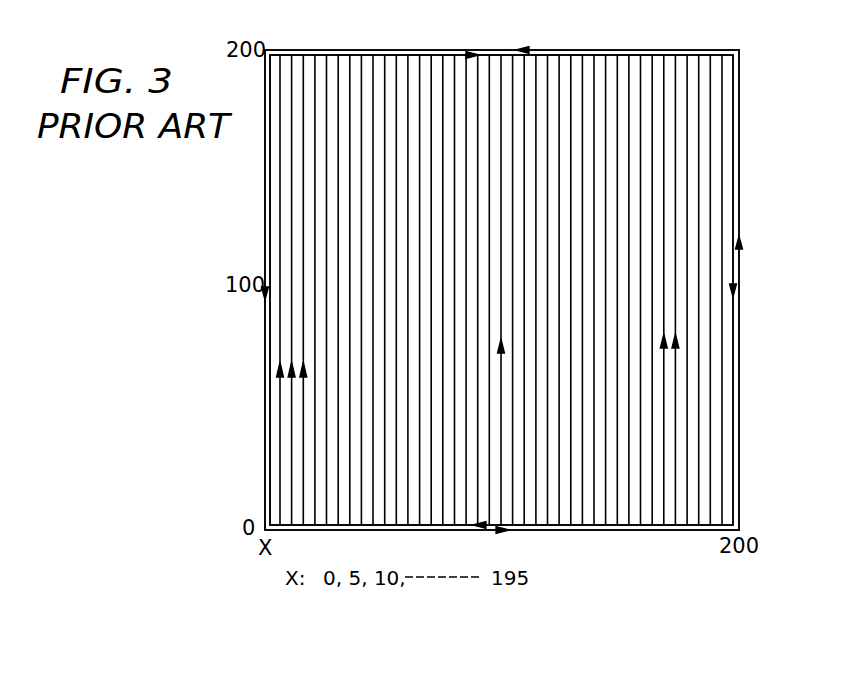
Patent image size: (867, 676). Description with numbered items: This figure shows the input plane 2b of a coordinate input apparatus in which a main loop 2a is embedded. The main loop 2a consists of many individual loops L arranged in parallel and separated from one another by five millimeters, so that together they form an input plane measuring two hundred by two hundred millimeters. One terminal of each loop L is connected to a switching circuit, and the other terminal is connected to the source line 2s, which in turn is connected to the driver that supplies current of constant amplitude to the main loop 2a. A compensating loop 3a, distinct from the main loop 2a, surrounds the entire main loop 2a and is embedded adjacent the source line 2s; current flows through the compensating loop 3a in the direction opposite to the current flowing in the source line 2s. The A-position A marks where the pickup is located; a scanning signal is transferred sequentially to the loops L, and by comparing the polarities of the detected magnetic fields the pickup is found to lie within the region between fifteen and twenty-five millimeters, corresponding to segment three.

The main loop 2a is at (645, 55).
The input plane 2b is at (689, 403).
The source line 2s is at (397, 50).
The compensating loop 3a is at (265, 198).
The A-position A is at (322, 407).
The loop L is at (721, 456).